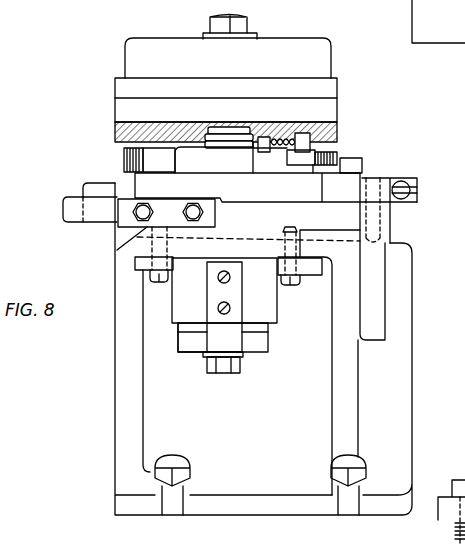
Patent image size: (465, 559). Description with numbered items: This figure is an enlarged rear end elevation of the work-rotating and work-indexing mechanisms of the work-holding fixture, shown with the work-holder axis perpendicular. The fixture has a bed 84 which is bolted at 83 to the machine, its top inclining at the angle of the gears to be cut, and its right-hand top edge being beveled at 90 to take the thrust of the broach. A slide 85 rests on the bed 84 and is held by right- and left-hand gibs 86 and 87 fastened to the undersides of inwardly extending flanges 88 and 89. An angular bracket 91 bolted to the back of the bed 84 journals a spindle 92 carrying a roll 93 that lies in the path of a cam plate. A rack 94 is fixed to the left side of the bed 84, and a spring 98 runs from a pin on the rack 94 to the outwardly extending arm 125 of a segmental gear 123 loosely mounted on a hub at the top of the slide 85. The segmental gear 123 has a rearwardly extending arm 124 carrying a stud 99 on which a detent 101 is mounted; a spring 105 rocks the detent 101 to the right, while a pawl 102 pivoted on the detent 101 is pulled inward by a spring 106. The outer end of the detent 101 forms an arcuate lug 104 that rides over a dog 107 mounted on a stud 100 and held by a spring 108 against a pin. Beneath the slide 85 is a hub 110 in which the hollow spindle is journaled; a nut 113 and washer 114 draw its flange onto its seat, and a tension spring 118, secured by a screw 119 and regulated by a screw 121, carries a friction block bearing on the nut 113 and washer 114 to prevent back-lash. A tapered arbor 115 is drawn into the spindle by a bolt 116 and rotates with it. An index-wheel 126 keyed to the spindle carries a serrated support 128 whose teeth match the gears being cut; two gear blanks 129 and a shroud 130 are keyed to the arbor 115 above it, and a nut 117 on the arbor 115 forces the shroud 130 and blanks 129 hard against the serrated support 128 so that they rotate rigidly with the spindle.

The bolt 83 is at (172, 463).
The bed 84 is at (263, 349).
The slide 85 is at (303, 354).
The right-hand gib 86 is at (147, 262).
The left-hand gib 87 is at (312, 275).
The flange 88 is at (150, 246).
The flange 89 is at (297, 243).
The bevel 90 is at (83, 233).
The angular bracket 91 is at (78, 198).
The spindle 92 is at (63, 208).
The roll 93 is at (102, 192).
The rack 94 is at (378, 180).
The spring 98 is at (414, 187).
The stud 99 is at (236, 122).
The stud 100 is at (227, 15).
The detent 101 is at (198, 160).
The pawl 102 is at (297, 152).
The arcuate lug 104 is at (375, 9).
The spring 105 is at (222, 128).
The spring 106 is at (304, 128).
The dog 107 is at (325, 160).
The spring 108 is at (464, 44).
The hub 110 is at (267, 310).
The nut 113 is at (257, 345).
The washer 114 is at (192, 328).
The arbor 115 is at (244, 15).
The bolt 116 is at (228, 364).
The nut 117 is at (222, 24).
The tension spring 118 is at (224, 307).
The screw 119 is at (231, 277).
The screw 121 is at (217, 308).
The segmental gear 123 is at (276, 187).
The arm 124 is at (233, 188).
The arm 125 is at (414, 198).
The index-wheel 126 is at (125, 155).
The serrated support 128 is at (125, 135).
The gear blanks 129 is at (130, 86).
The shroud 130 is at (138, 53).